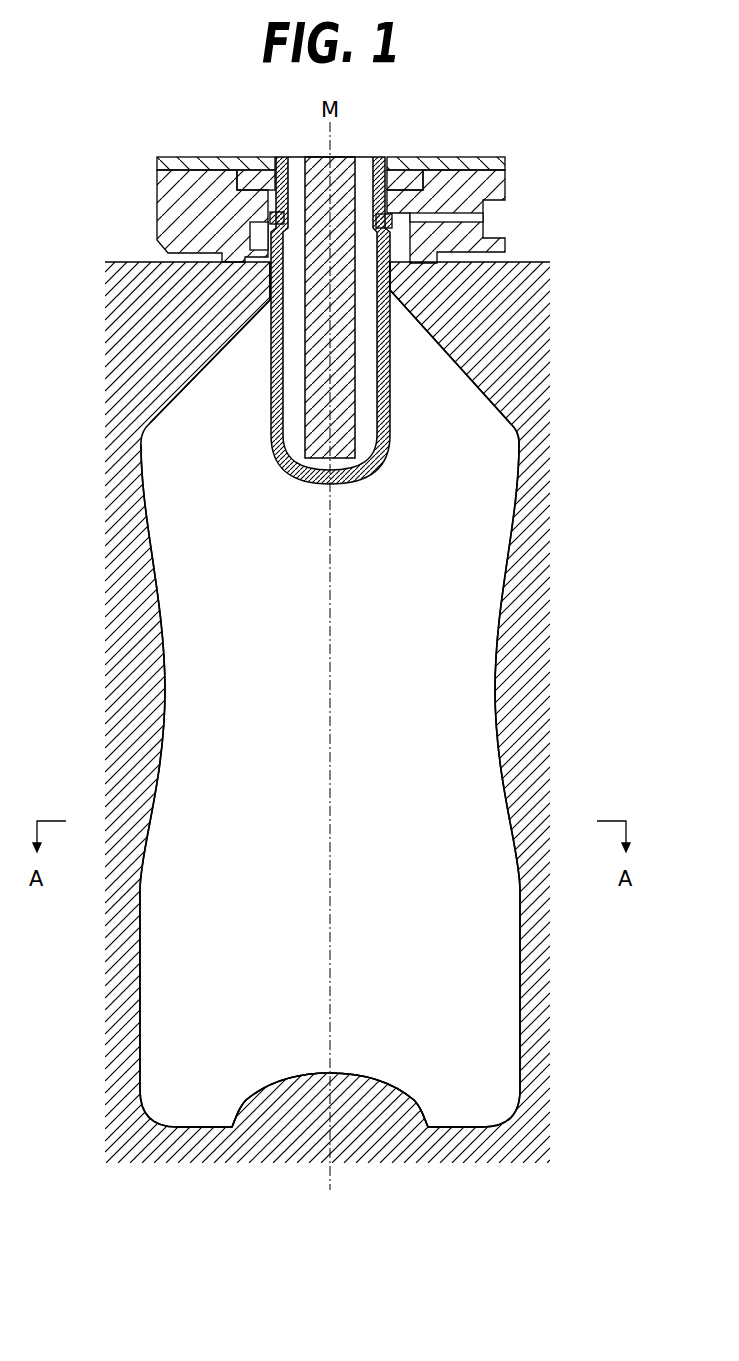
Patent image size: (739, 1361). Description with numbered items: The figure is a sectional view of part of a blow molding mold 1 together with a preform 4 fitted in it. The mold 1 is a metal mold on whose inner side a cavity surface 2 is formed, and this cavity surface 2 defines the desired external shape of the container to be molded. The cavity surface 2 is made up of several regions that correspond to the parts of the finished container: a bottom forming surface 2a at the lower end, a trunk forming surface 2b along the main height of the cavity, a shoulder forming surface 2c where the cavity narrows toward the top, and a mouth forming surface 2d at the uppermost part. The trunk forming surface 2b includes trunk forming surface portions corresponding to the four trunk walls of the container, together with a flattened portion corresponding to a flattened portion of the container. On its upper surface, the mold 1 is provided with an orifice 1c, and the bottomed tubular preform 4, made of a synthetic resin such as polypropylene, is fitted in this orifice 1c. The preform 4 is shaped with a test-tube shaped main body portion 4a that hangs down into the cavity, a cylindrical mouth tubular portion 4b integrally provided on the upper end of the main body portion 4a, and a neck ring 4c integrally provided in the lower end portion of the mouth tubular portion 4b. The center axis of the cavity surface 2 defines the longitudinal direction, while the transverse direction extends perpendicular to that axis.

The blow molding mold 1 is at (547, 599).
The orifice 1c is at (266, 296).
The cavity surface 2 is at (520, 979).
The bottom forming surface 2a is at (455, 1127).
The trunk forming surface 2b is at (493, 690).
The shoulder forming surface 2c is at (470, 390).
The mouth forming surface 2d is at (386, 278).
The preform 4 is at (391, 455).
The main body portion 4a is at (391, 394).
The mouth tubular portion 4b is at (437, 215).
The neck ring 4c is at (392, 250).